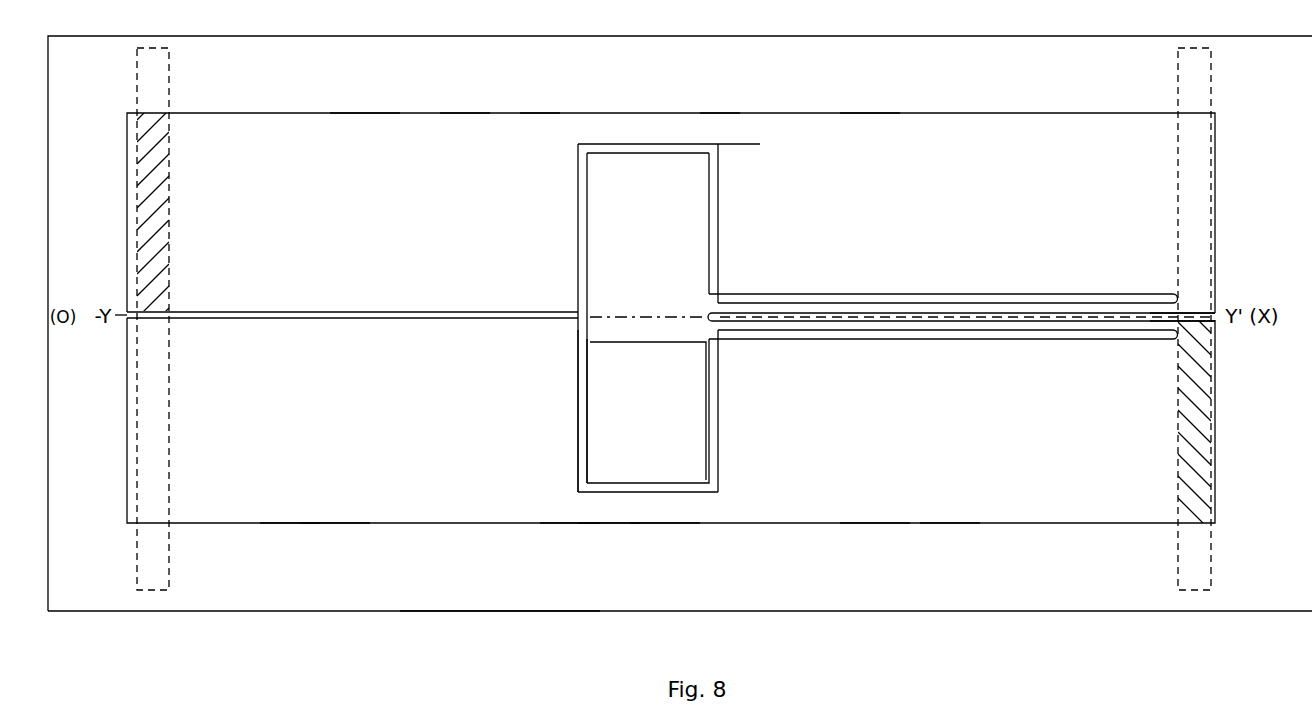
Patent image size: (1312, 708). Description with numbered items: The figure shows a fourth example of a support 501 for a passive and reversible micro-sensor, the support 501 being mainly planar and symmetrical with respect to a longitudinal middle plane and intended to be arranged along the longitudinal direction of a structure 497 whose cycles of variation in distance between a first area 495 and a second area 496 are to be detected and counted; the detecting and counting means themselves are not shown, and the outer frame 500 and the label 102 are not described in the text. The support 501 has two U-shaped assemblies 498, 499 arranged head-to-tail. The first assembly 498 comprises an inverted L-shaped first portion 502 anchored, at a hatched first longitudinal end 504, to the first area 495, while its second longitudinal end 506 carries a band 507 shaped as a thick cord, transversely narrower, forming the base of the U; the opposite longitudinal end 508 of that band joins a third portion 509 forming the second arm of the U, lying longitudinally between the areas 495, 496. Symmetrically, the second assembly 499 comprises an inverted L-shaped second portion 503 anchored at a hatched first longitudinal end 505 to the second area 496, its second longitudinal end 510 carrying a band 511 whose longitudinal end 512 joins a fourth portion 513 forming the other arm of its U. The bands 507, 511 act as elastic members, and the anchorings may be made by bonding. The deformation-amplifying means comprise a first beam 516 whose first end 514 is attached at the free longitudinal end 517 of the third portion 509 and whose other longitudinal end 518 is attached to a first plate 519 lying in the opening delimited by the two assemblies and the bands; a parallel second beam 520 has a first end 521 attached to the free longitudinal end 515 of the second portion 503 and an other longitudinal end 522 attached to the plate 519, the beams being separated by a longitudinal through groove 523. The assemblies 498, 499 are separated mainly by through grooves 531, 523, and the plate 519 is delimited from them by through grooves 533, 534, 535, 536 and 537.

The substrate 102 is at (126, 290).
The first area 495 is at (485, 611).
The second area 496 is at (135, 565).
The structure 497 is at (1215, 525).
The first assembly 498 is at (395, 112).
The second assembly 499 is at (330, 495).
The frame 500 is at (915, 611).
The support 501 is at (535, 110).
The first portion 502 is at (464, 132).
The second portion 503 is at (865, 500).
The first longitudinal end 504 is at (137, 148).
The first longitudinal end 505 is at (1215, 440).
The second longitudinal end 506 is at (724, 125).
The band 507 is at (640, 128).
The opposite longitudinal end 508 is at (722, 130).
The third portion 509 is at (870, 150).
The second longitudinal end 510 is at (605, 512).
The band 511 is at (655, 505).
The longitudinal end 512 is at (580, 505).
The fourth portion 513 is at (300, 490).
The first end 514 is at (1170, 298).
The free longitudinal end 515 is at (1215, 340).
The first beam 516 is at (915, 294).
The free longitudinal end 517 is at (1215, 295).
The other longitudinal end 518 is at (718, 298).
The first plate 519 is at (670, 398).
The second beam 520 is at (915, 340).
The first end 521 is at (1170, 335).
The other longitudinal end 522 is at (725, 333).
The longitudinal through groove 523 is at (855, 328).
The through groove 531 is at (560, 318).
The through groove 533 is at (710, 438).
The through groove 534 is at (665, 490).
The through groove 535 is at (582, 395).
The through groove 536 is at (632, 150).
The through groove 537 is at (720, 170).